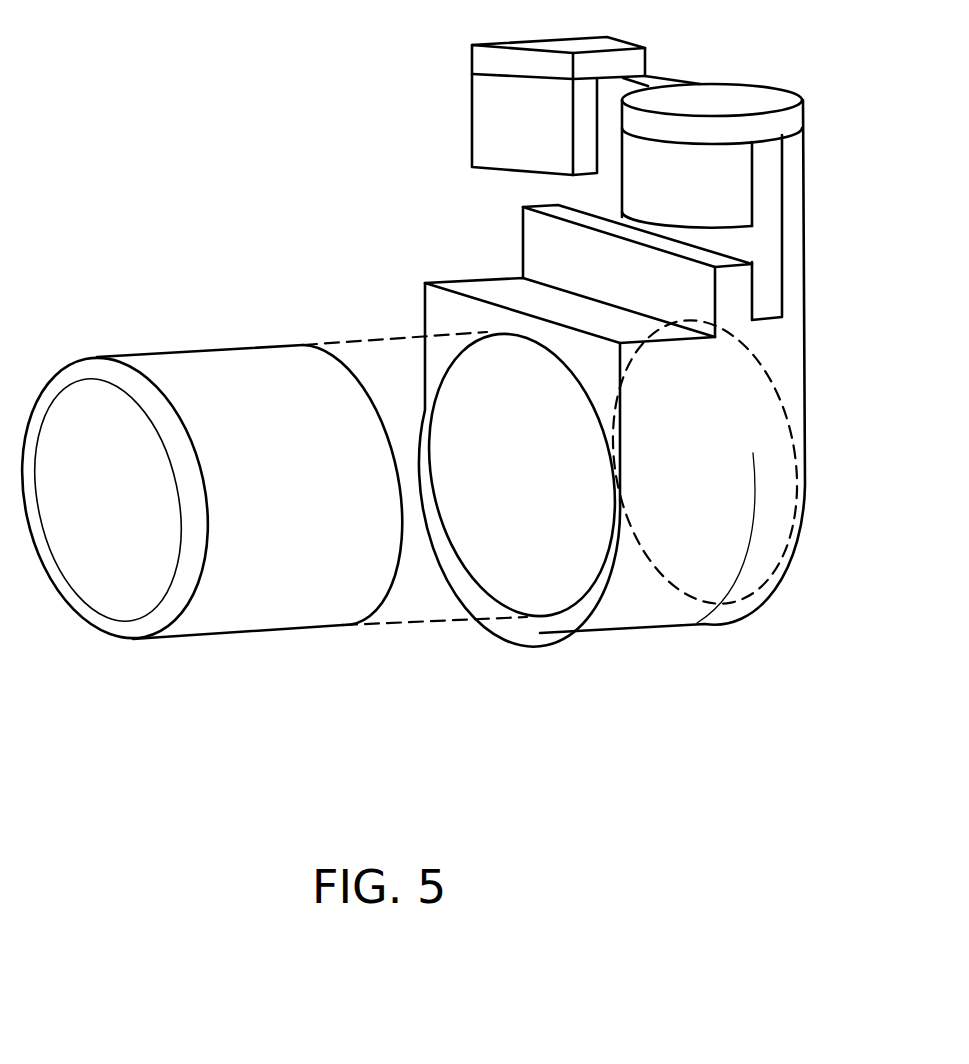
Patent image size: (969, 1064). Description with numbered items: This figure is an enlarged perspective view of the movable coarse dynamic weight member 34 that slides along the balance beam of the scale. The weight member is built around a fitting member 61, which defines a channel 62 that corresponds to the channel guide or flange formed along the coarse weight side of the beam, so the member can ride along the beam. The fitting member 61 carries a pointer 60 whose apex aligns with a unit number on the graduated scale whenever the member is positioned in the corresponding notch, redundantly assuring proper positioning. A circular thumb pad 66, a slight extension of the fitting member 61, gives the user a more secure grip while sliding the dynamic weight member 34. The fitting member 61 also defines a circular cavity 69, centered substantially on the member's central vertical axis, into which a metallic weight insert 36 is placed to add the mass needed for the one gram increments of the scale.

The dynamic weight member 34 is at (268, 163).
The metallic weight insert 36 is at (262, 430).
The pointer 60 is at (472, 45).
The fitting member 61 is at (804, 353).
The channel 62 is at (757, 243).
The thumb pad 66 is at (712, 100).
The cavity 69 is at (567, 595).